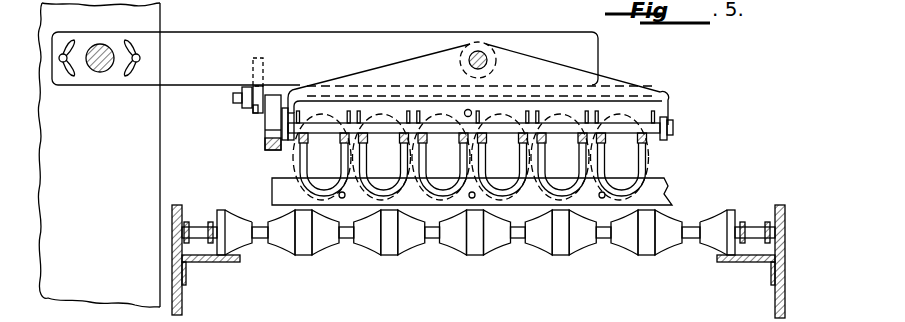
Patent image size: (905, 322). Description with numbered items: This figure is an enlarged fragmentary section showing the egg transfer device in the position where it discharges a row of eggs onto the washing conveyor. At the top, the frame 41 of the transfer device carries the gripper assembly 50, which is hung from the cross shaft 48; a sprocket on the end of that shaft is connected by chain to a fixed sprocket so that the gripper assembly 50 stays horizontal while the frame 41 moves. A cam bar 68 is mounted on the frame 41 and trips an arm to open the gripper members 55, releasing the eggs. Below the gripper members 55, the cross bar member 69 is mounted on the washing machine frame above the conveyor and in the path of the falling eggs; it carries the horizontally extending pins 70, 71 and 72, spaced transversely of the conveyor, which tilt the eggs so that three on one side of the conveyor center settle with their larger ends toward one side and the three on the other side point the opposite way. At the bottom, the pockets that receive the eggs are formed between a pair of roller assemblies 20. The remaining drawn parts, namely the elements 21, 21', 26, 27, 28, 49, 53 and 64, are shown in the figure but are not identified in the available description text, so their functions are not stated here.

The roller assemblies 20 is at (652, 256).
The side wall 21 is at (188, 248).
The side wall 21' is at (765, 249).
The conical roller portion 26 is at (491, 252).
The stub shaft 27 is at (220, 211).
The angle bracket 28 is at (197, 263).
The frame 41 is at (275, 32).
The cross shaft 48 is at (482, 51).
The bracket plate 49 is at (622, 80).
The gripper assembly 50 is at (495, 105).
The end plate 53 is at (665, 119).
The gripper members 55 is at (646, 162).
The clamping bolt 64 is at (238, 105).
The cam bar 68 is at (258, 105).
The cross bar member 69 is at (671, 182).
The pin 70 is at (604, 192).
The pin 71 is at (475, 193).
The pin 72 is at (340, 192).